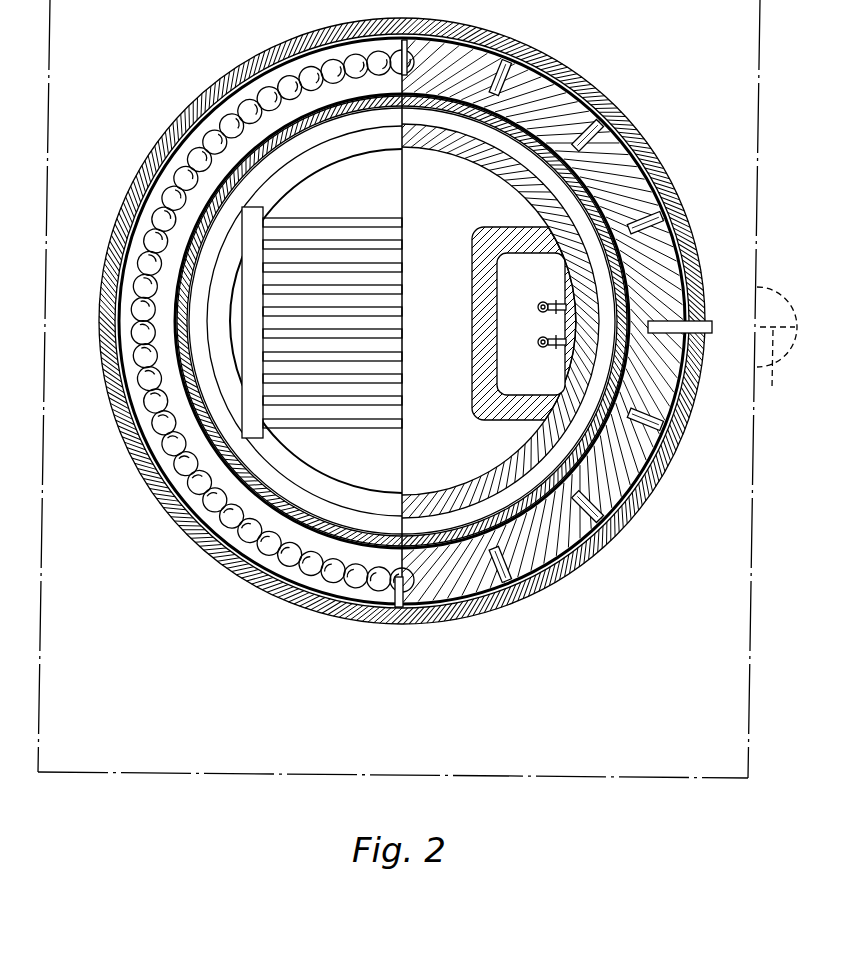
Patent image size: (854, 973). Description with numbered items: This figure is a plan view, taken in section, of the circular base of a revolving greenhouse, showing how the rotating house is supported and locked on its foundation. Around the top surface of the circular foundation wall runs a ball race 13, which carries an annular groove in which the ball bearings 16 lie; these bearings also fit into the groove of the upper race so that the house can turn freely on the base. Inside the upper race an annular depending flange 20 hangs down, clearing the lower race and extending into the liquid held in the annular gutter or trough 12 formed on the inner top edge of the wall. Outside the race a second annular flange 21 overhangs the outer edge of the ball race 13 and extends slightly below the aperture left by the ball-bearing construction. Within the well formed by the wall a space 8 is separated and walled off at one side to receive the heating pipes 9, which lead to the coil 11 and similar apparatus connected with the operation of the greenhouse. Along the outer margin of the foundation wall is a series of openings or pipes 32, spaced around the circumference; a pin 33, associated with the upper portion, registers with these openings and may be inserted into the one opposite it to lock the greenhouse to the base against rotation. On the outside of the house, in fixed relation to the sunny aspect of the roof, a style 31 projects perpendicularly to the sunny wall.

The space 8 is at (524, 323).
The heating pipes 9 is at (540, 340).
The coil 11 is at (360, 247).
The annular gutter or trough 12 is at (408, 321).
The ball race 13 is at (390, 321).
The ball bearings 16 is at (241, 321).
The annular depending flange 20 is at (402, 321).
The second annular flange 21 is at (155, 256).
The style 31 is at (777, 350).
The openings or pipes 32 is at (613, 321).
The pin 33 is at (691, 285).